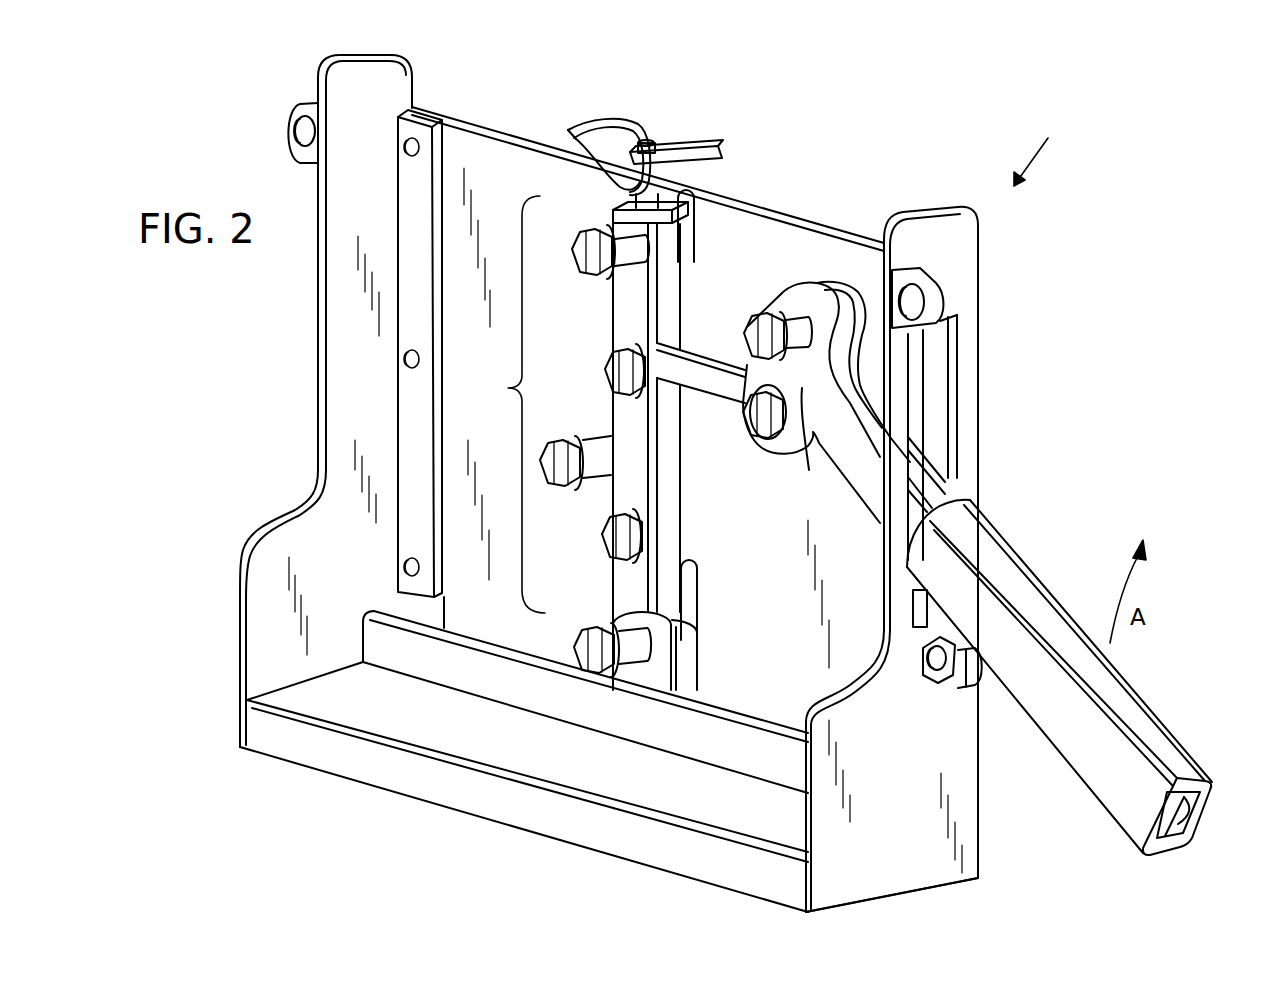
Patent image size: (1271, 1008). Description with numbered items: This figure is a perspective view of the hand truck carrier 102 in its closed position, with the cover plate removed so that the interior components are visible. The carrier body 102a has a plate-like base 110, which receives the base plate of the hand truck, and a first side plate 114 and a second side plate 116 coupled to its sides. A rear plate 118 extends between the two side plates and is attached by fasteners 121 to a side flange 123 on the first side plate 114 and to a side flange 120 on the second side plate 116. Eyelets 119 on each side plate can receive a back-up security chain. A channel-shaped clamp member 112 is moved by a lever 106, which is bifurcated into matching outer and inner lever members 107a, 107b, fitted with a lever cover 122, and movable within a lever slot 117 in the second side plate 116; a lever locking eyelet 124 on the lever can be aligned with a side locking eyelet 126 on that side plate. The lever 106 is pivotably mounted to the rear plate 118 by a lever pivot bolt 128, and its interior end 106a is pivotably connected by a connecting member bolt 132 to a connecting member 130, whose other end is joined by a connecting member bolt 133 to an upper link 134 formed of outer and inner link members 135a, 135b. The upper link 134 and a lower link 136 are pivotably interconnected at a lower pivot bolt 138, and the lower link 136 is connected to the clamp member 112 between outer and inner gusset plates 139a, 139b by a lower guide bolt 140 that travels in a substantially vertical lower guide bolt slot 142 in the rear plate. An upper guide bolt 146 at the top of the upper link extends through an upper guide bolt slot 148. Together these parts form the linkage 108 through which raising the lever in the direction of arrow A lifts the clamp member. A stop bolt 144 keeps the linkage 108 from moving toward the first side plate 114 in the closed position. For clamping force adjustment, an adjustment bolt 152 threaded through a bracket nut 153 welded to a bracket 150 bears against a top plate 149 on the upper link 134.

The carrier 102 is at (1046, 145).
The carrier body 102a is at (960, 757).
The lever 106 is at (862, 475).
The interior end of the lever 106a is at (809, 470).
The outer lever member 107a is at (795, 288).
The inner lever member 107b is at (843, 282).
The linkage 108 is at (499, 404).
The base 110 is at (398, 795).
The clamp member 112 is at (420, 662).
The first side plate 114 is at (237, 590).
The second side plate 116 is at (970, 818).
The lever slot 117 is at (960, 384).
The rear plate 118 is at (747, 200).
The eyelets 119 is at (290, 128).
The side flange 120 is at (956, 432).
The fasteners 121 is at (404, 150).
The lever cover 122 is at (1150, 710).
The side flange 123 is at (415, 203).
The lever locking eyelet 124 is at (962, 700).
The side locking eyelet 126 is at (925, 638).
The lever pivot bolt 128 is at (746, 330).
The connecting member 130 is at (706, 403).
The connecting member bolt 132 is at (761, 424).
The connecting member bolt 133 is at (606, 368).
The upper link 134 is at (681, 296).
The outer link member 135a is at (618, 324).
The inner link member 135b is at (665, 482).
The lower link 136 is at (595, 539).
The lower pivot bolt 138 is at (560, 483).
The outer gusset plate 139a is at (660, 653).
The inner gusset plate 139b is at (687, 662).
The lower guide bolt 140 is at (582, 640).
The lower guide bolt slot 142 is at (697, 581).
The stop bolt 144 is at (584, 437).
The upper guide bolt 146 is at (574, 254).
The upper guide bolt slot 148 is at (694, 240).
The top plate 149 is at (626, 211).
The bracket 150 is at (712, 147).
The adjustment bolt 152 is at (650, 140).
The bracket nut 153 is at (598, 170).